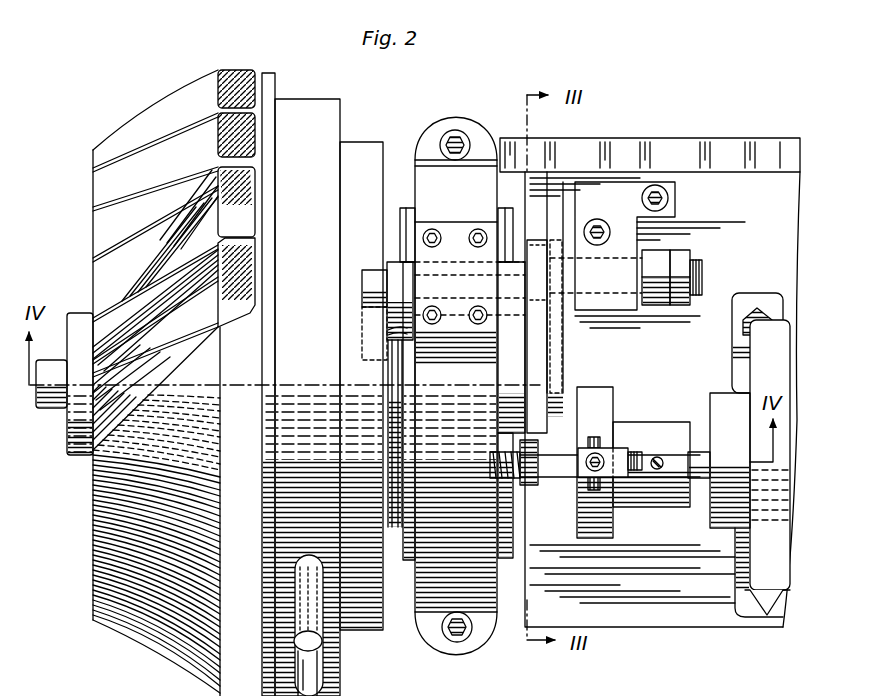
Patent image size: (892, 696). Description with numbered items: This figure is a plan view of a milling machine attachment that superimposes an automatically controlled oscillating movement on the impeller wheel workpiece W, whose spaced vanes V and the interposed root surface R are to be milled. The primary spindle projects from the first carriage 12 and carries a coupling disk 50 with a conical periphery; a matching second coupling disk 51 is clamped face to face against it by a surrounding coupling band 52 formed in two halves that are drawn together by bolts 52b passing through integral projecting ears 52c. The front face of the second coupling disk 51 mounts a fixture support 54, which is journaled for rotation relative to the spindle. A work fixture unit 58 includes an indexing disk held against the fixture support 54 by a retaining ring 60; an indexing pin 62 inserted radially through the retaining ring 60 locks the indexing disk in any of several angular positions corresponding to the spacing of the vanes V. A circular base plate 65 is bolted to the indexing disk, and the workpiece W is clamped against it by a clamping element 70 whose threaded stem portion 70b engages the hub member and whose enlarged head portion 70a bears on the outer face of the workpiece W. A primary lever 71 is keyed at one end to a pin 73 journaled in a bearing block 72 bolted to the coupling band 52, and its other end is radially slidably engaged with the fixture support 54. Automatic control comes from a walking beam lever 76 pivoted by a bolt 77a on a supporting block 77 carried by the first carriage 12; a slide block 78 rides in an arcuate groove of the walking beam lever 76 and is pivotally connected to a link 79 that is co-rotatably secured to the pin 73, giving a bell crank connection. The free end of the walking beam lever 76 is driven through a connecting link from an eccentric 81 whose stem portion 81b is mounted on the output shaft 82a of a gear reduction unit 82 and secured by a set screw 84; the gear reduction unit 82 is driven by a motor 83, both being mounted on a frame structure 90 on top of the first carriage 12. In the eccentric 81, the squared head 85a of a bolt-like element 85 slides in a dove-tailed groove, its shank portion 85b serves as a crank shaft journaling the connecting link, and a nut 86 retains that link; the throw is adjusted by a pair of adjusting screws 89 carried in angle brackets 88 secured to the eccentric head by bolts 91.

The first carriage 12 is at (662, 632).
The coupling disk 50 is at (513, 558).
The second coupling disk 51 is at (410, 565).
The coupling band 52 is at (417, 605).
The bolts 52b is at (452, 128).
The projecting ears 52c is at (473, 120).
The fixture support 54 is at (357, 157).
The work fixture unit 58 is at (394, 250).
The retaining ring 60 is at (303, 99).
The indexing pin 62 is at (320, 650).
The base plate 65 is at (268, 77).
The clamping element 70 is at (76, 312).
The head portion 70a is at (78, 452).
The threaded stem portion 70b is at (56, 408).
The primary lever 71 is at (407, 333).
The bearing block 72 is at (452, 240).
The pin 73 is at (372, 272).
The walking beam lever 76 is at (583, 352).
The supporting block 77 is at (620, 305).
The bolt 77a is at (705, 275).
The slide block 78 is at (550, 390).
The link 79 is at (513, 355).
The eccentric 81 is at (597, 538).
The stem portion 81b is at (650, 490).
The gear reduction unit 82 is at (718, 530).
The output shaft 82a is at (699, 447).
The motor 83 is at (773, 333).
The set screw 84 is at (660, 460).
The bolt-like element 85 is at (590, 480).
The squared head 85a is at (599, 440).
The shank portion 85b is at (490, 460).
The nut 86 is at (530, 478).
The angle brackets 88 is at (618, 450).
The adjusting screws 89 is at (590, 455).
The frame structure 90 is at (630, 605).
The bolts 91 is at (637, 455).
The impeller wheel workpiece W is at (100, 512).
The vanes V is at (192, 200).
The root surface R is at (233, 117).